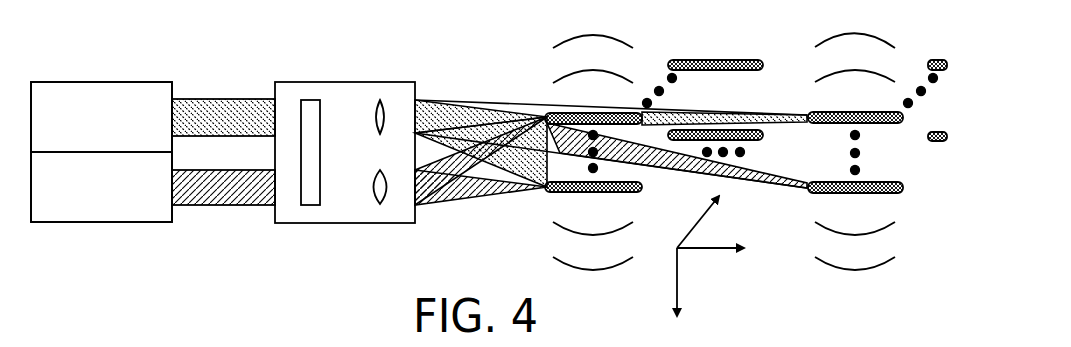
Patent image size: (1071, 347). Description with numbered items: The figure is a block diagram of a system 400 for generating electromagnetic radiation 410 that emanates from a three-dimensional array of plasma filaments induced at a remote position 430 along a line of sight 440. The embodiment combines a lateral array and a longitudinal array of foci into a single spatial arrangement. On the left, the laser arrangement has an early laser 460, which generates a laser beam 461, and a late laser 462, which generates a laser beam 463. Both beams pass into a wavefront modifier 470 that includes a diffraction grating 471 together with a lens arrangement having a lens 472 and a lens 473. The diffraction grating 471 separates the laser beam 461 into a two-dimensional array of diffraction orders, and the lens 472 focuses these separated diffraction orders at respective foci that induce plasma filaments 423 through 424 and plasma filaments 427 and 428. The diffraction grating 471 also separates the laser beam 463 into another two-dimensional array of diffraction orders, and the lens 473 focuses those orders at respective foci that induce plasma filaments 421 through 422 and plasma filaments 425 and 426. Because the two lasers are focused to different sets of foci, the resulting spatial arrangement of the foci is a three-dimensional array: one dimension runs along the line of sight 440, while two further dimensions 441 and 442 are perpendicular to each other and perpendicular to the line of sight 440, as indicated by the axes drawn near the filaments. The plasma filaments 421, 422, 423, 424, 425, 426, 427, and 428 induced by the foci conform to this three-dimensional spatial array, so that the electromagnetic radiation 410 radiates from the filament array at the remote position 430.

The system 400 is at (61, 74).
The electromagnetic radiation 410 is at (558, 43).
The plasma filament 421 is at (600, 124).
The plasma filament 422 is at (600, 182).
The plasma filament 423 is at (845, 123).
The plasma filament 424 is at (845, 193).
The plasma filament 425 is at (757, 70).
The plasma filament 426 is at (753, 140).
The plasma filament 427 is at (938, 60).
The plasma filament 428 is at (937, 141).
The remote position 430 is at (496, 90).
The line of sight 440 is at (718, 246).
The dimension 441 is at (678, 292).
The dimension 442 is at (687, 230).
The early laser 460 is at (149, 82).
The laser beam 461 is at (227, 99).
The late laser 462 is at (149, 223).
The laser beam 463 is at (227, 205).
The wavefront modifier 470 is at (285, 82).
The diffraction grating 471 is at (350, 155).
The lens 472 is at (374, 127).
The lens 473 is at (370, 182).